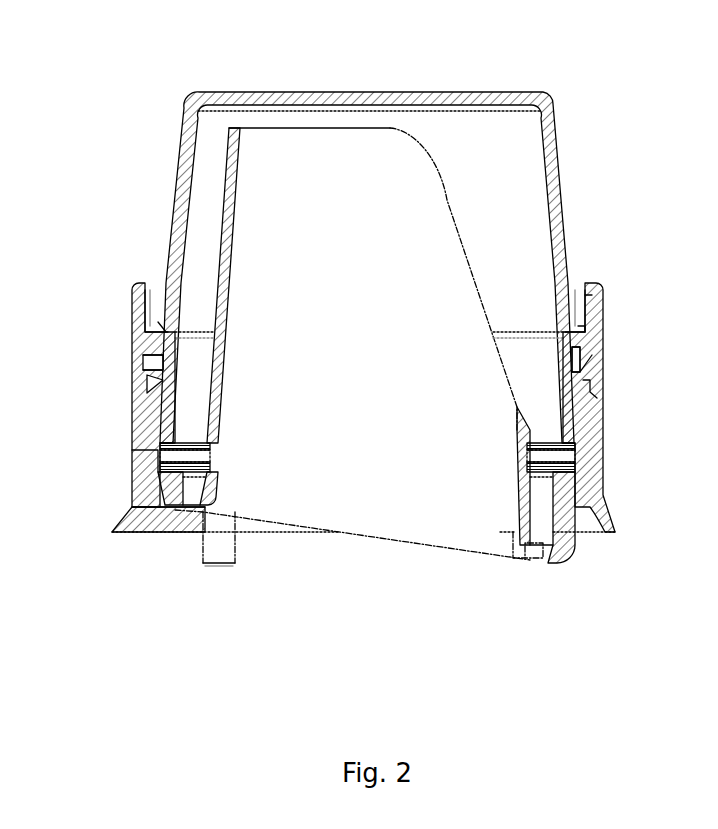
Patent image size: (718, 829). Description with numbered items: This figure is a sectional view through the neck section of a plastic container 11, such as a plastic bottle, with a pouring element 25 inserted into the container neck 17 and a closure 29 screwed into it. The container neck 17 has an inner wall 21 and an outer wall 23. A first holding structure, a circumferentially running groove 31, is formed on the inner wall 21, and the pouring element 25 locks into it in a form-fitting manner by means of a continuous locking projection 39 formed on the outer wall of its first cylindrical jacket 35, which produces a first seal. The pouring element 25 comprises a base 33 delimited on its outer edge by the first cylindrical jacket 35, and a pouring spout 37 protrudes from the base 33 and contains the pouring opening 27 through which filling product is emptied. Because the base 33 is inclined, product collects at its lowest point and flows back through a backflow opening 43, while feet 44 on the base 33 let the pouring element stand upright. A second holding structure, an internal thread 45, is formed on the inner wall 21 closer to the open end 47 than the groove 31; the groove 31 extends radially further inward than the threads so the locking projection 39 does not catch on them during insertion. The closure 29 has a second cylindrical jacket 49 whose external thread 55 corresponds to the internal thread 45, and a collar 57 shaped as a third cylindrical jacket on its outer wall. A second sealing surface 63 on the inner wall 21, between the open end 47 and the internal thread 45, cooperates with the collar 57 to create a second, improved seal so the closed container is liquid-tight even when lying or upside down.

The plastic container 11 is at (594, 122).
The container neck 17 is at (600, 462).
The inner wall 21 is at (153, 433).
The outer wall 23 is at (137, 472).
The pouring element 25 is at (415, 530).
The pouring opening 27 is at (316, 114).
The closure 29 is at (217, 128).
The groove 31 is at (575, 472).
The base 33 is at (190, 500).
The first cylindrical jacket 35 is at (562, 530).
The pouring spout 37 is at (410, 182).
The locking projection 39 is at (165, 475).
The backflow opening 43 is at (537, 553).
The feet 44 is at (222, 545).
The internal thread 45 is at (585, 370).
The open end 47 is at (593, 293).
The second cylindrical jacket 49 is at (170, 360).
The external thread 55 is at (585, 378).
The collar 57 is at (153, 312).
The second sealing surface 63 is at (588, 328).